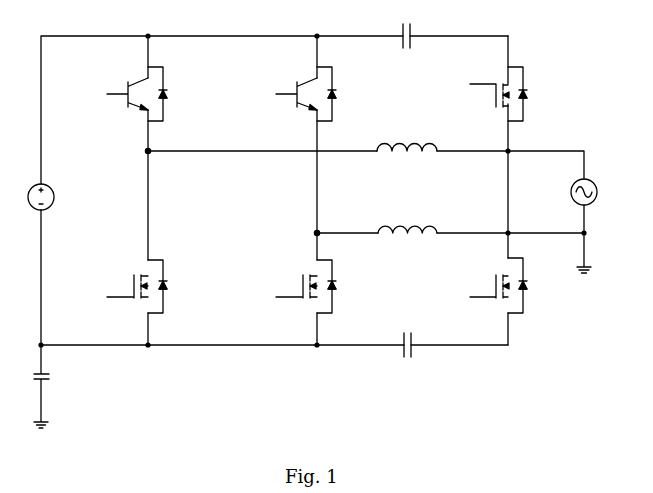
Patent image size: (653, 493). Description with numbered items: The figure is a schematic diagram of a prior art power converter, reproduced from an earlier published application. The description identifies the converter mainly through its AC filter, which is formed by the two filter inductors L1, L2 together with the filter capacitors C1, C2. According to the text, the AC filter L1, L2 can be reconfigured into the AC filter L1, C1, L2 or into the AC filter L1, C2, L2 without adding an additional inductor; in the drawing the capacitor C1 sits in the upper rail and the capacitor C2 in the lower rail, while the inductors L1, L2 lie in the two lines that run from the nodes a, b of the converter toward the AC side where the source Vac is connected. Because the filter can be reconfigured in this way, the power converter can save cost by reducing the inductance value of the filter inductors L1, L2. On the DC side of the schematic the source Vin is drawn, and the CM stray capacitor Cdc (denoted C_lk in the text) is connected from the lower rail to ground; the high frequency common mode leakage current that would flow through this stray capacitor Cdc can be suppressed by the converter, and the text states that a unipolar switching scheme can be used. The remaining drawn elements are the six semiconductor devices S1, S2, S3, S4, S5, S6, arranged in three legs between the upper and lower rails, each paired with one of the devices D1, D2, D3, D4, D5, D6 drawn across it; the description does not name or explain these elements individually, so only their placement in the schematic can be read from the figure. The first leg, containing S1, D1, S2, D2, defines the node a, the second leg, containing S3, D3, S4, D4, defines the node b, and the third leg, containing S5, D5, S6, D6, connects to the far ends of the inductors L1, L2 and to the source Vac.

The first switch (IGBT) S1 is at (123, 87).
The second switch (MOSFET) S2 is at (123, 275).
The third switch (IGBT) S3 is at (292, 87).
The fourth switch (MOSFET) S4 is at (292, 275).
The fifth switch (MOSFET) S5 is at (486, 99).
The sixth switch (MOSFET) S6 is at (486, 279).
The first diode D1 is at (165, 94).
The second diode D2 is at (165, 286).
The third diode D3 is at (334, 94).
The fourth diode D4 is at (334, 286).
The fifth diode D5 is at (525, 94).
The sixth diode D6 is at (525, 285).
The AC filter capacitor C1 is at (404, 47).
The AC filter capacitor C2 is at (406, 359).
The CM stray capacitor Cdc is at (58, 386).
The filter inductor L1 is at (407, 157).
The filter inductor L2 is at (407, 239).
The input voltage source Vin is at (28, 197).
The AC grid voltage source Vac is at (597, 192).
The node a is at (141, 151).
The node b is at (310, 233).